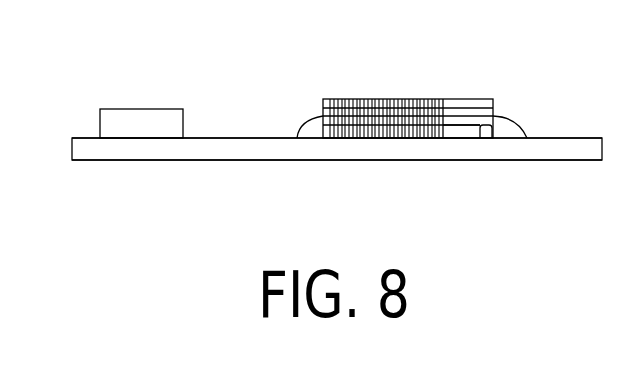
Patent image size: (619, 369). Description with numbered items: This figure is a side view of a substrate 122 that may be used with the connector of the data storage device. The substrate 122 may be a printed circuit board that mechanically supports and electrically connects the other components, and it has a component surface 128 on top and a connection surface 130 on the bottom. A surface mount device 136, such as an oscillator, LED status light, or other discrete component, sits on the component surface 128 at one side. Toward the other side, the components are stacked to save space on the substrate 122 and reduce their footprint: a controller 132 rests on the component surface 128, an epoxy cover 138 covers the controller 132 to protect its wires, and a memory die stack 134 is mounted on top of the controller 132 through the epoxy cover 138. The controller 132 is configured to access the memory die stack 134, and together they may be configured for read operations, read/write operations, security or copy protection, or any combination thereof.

The substrate 122 is at (238, 148).
The component surface 128 is at (222, 128).
The connection surface 130 is at (493, 170).
The controller 132 is at (465, 135).
The memory die stack 134 is at (478, 102).
The surface mount device 136 is at (170, 116).
The epoxy cover 138 is at (315, 118).